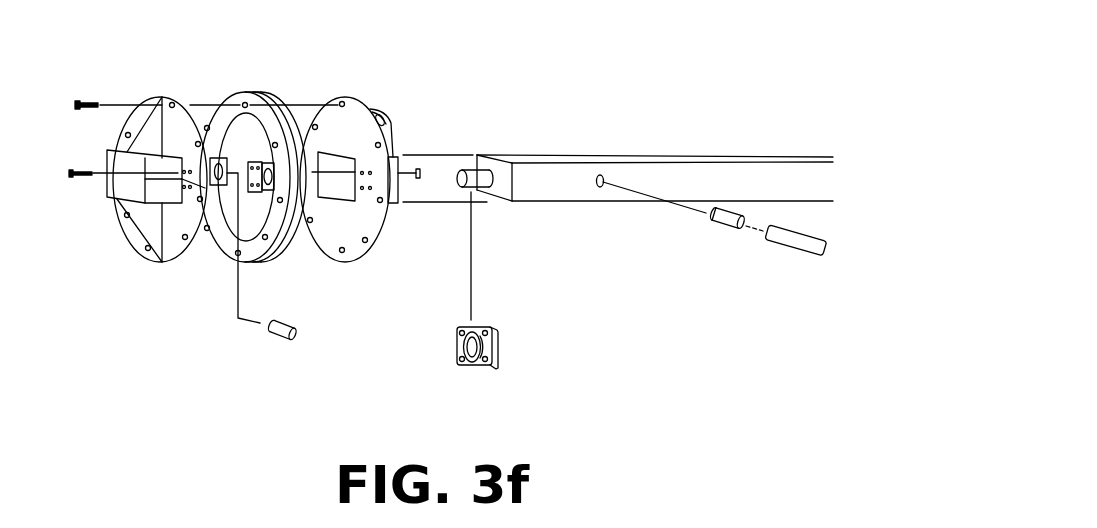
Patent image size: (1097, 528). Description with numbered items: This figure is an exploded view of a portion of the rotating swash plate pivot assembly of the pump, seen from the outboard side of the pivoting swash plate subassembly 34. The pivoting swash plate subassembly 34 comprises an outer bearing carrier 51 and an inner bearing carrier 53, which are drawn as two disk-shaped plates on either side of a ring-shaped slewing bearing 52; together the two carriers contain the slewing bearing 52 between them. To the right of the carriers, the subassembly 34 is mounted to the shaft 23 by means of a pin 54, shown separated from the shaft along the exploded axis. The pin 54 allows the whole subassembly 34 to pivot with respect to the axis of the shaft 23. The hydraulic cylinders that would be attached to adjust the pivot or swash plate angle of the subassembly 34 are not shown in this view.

The outer bearing carrier 51 is at (161, 97).
The ring-shaped slewing bearing 52 is at (260, 92).
The inner bearing carrier 53 is at (342, 98).
The pivoting swash plate subassembly 34 is at (582, 122).
The shaft 23 is at (733, 155).
The pin 54 is at (817, 254).